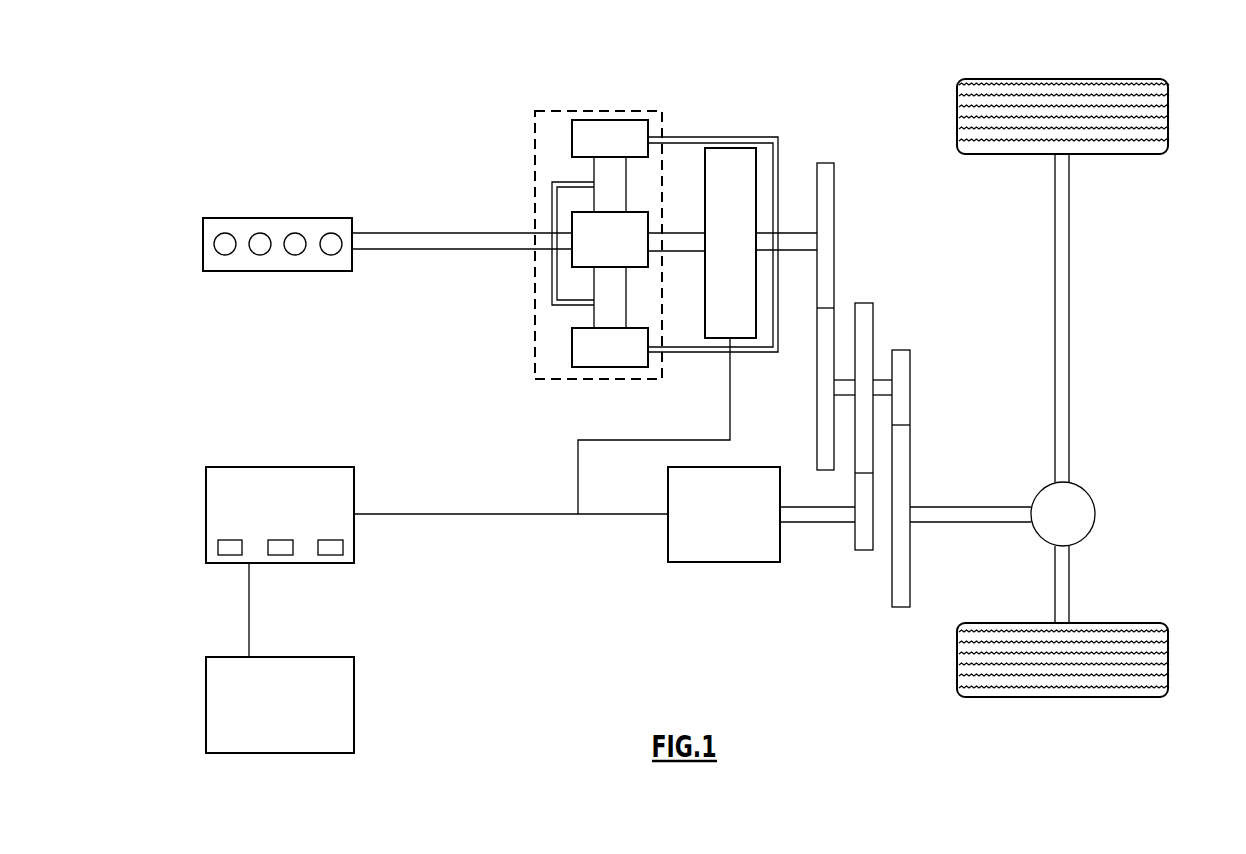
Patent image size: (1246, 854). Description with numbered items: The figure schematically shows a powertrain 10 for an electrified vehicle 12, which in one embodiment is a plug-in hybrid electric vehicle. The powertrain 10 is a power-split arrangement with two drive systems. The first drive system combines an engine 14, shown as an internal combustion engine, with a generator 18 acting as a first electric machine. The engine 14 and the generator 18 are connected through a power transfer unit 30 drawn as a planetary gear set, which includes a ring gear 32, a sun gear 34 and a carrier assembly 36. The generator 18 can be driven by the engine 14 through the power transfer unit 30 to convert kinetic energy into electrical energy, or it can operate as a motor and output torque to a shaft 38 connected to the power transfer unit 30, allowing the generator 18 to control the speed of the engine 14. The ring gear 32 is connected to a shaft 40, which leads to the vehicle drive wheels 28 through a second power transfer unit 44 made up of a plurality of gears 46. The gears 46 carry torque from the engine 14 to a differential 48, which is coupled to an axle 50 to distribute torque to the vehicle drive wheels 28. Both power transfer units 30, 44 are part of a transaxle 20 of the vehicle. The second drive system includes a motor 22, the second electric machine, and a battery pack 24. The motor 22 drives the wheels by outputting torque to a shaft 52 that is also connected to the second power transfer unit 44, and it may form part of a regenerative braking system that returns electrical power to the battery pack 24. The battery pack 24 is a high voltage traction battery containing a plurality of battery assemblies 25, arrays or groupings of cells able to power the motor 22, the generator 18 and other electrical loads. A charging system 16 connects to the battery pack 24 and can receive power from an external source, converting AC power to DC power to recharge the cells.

The powertrain 10 is at (404, 138).
The electrified vehicle 12 is at (745, 81).
The engine 14 is at (221, 218).
The charging system 16 is at (354, 695).
The generator 18 is at (715, 148).
The transaxle 20 is at (802, 173).
The motor 22 is at (780, 548).
The battery pack 24 is at (221, 467).
The battery assemblies 25 is at (242, 548).
The vehicle drive wheels 28 is at (1168, 657).
The power transfer unit 30 is at (535, 342).
The ring gear 32 is at (572, 140).
The sun gear 34 is at (572, 221).
The carrier assembly 36 is at (552, 295).
The shaft 38 is at (674, 233).
The shaft 40 is at (797, 232).
The second power transfer unit 44 is at (891, 276).
The gears 46 is at (834, 276).
The differential 48 is at (1088, 530).
The axle 50 is at (1071, 308).
The shaft 52 is at (826, 522).